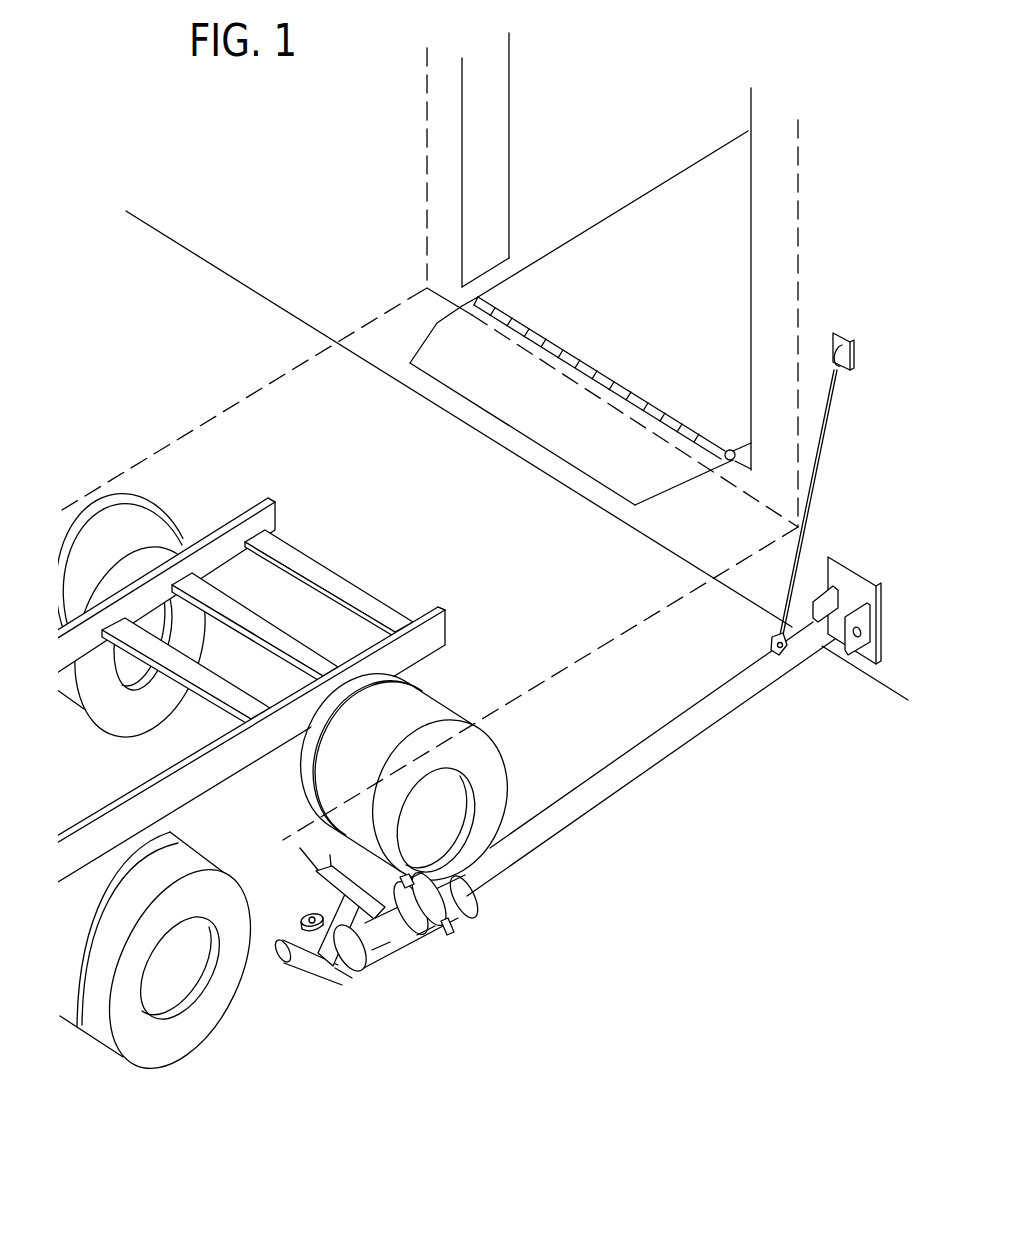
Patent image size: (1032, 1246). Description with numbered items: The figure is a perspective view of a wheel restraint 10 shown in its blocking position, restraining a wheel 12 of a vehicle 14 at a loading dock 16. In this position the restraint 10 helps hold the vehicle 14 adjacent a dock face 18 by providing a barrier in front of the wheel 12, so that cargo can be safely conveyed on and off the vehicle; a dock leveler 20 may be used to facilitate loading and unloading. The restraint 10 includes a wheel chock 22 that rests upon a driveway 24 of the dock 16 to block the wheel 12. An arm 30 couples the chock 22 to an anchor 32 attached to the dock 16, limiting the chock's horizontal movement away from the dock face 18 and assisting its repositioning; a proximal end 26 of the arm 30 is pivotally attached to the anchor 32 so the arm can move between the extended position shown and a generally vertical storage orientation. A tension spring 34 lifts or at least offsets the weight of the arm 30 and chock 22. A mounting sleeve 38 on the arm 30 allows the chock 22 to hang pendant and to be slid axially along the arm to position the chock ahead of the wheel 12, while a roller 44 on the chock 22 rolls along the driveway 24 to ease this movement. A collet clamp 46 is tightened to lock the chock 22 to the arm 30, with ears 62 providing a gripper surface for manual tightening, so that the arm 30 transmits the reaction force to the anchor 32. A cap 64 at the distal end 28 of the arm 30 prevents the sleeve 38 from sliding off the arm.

The wheel restraint 10 is at (401, 996).
The wheel 12 is at (506, 758).
The vehicle 14 is at (468, 612).
The loading dock 16 is at (211, 356).
The dock face 18 is at (703, 513).
The dock leveler 20 is at (615, 218).
The wheel chock 22 is at (332, 972).
The driveway 24 is at (270, 977).
The proximal end 26 is at (832, 650).
The distal end 28 is at (373, 947).
The arm 30 is at (633, 780).
The anchor 32 is at (843, 588).
The tension spring 34 is at (820, 468).
The mounting sleeve 38 is at (408, 928).
The roller 44 is at (300, 912).
The collet clamp 46 is at (450, 905).
The ears 62 is at (447, 935).
The cap 64 is at (371, 1023).